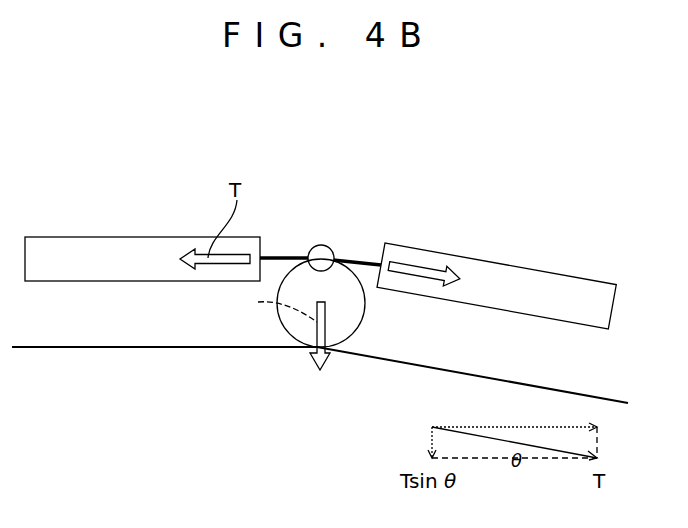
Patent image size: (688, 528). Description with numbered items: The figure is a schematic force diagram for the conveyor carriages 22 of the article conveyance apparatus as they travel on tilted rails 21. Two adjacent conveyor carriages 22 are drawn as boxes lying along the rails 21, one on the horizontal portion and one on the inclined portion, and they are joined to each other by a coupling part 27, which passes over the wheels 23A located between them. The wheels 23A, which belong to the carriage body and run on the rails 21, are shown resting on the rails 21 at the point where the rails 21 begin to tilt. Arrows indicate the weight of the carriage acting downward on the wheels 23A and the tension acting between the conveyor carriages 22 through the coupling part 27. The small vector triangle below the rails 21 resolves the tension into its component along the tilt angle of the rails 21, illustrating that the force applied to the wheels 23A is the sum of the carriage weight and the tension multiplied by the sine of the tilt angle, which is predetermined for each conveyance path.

The rails 21 is at (530, 383).
The conveyor carriage 22 is at (83, 260).
The coupling part 27 is at (362, 258).
The wheels 23A is at (347, 300).